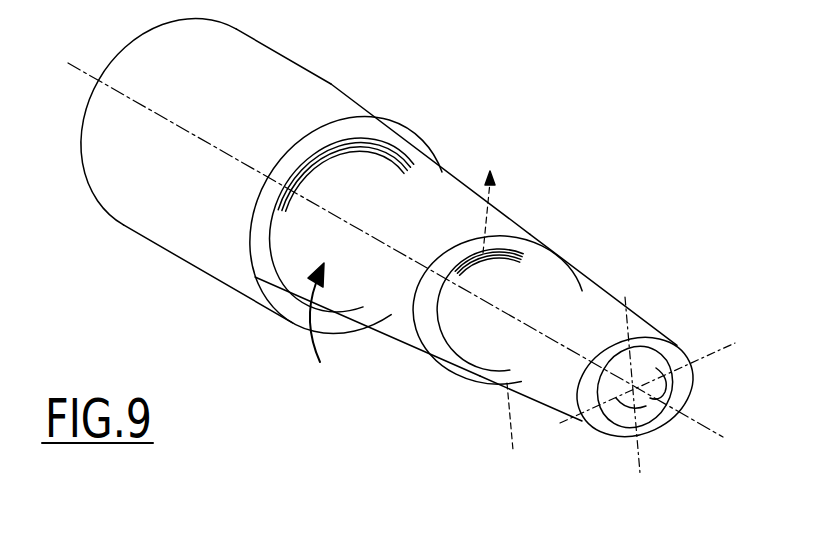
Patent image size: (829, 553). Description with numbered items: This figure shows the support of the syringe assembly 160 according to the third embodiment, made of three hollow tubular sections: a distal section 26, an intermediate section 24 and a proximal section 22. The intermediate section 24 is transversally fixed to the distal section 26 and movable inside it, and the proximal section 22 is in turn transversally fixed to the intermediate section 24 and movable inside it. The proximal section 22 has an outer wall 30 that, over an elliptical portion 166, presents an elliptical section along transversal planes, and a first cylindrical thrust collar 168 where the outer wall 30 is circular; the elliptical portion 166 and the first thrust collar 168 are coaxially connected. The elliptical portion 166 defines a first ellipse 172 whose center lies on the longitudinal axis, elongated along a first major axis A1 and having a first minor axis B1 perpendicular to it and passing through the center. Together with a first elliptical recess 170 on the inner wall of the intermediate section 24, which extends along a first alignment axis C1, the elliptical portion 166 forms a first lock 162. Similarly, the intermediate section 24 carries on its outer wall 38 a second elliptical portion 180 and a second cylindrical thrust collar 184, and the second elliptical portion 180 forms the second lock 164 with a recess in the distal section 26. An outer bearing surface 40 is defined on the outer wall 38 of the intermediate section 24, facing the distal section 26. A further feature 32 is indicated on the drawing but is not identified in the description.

The syringe assembly 160 is at (488, 95).
The distal section 26 is at (140, 173).
The second cylindrical thrust collar 184 is at (355, 148).
The second elliptical portion 180 is at (388, 193).
The intermediate section 24 is at (418, 202).
The proximal section 22 is at (590, 313).
The first elliptical recess 170 is at (521, 214).
The first cylindrical thrust collar 168 is at (501, 221).
The outer wall 38 is at (553, 230).
The wall 32 is at (582, 263).
The outer wall 30 is at (660, 331).
The first ellipse 172 is at (694, 372).
The first major axis A1 is at (686, 408).
The first minor axis B1 is at (642, 408).
The first alignment axis C1 is at (506, 313).
The elliptical portion 166 is at (543, 427).
The first lock 162 is at (425, 390).
The outer bearing surface 40 is at (368, 348).
The second lock 164 is at (258, 326).